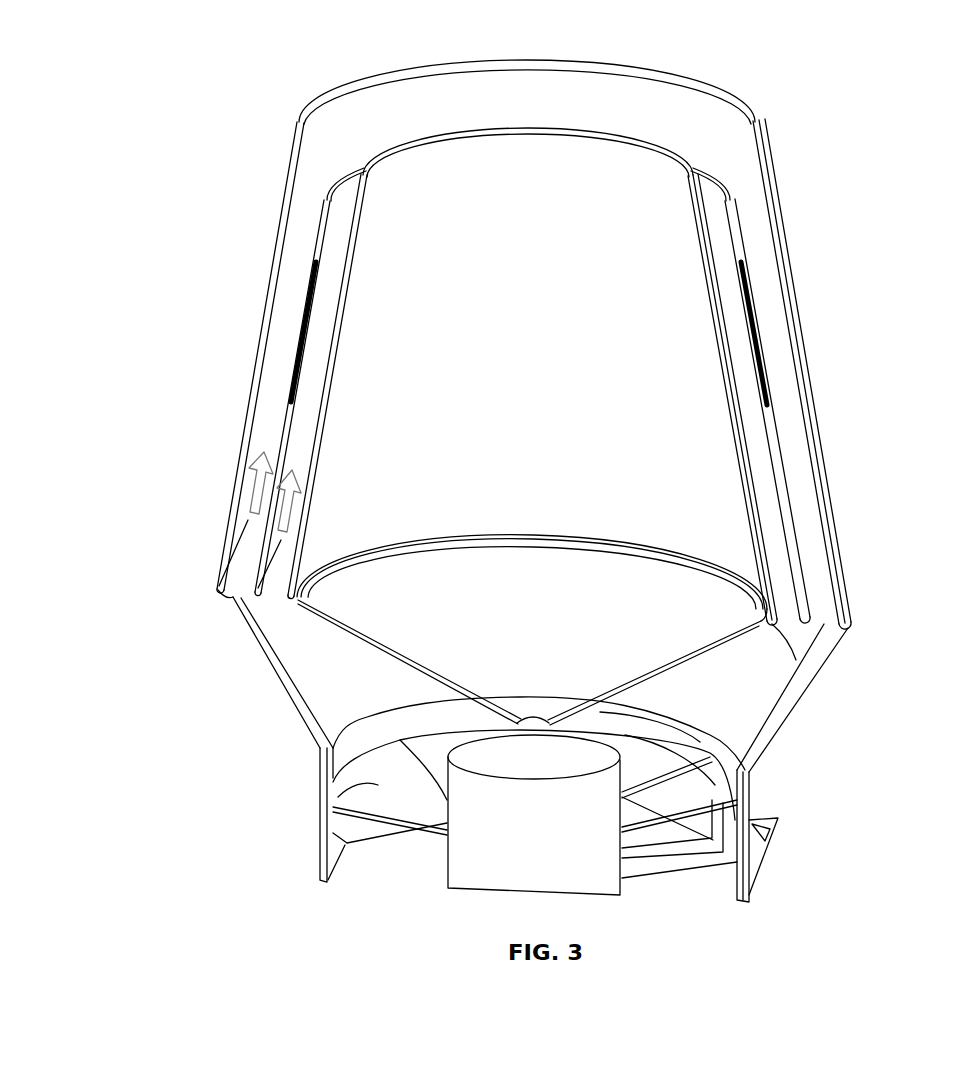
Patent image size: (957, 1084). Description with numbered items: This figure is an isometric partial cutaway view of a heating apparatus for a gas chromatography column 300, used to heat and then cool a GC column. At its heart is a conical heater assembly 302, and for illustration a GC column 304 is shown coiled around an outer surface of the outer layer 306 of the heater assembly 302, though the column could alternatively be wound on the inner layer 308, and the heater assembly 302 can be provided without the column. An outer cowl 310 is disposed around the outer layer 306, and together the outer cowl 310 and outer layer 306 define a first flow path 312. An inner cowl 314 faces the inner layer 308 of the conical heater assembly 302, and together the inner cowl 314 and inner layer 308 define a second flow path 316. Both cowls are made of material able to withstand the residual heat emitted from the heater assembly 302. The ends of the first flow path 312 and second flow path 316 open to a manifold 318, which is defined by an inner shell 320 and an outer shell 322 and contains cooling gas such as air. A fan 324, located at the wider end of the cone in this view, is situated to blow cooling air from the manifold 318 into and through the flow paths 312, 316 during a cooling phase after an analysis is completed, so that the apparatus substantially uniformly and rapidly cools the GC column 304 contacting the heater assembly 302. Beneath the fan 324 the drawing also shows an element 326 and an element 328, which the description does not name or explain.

The gas chromatography column heating apparatus 300 is at (779, 91).
The heater assembly 302 is at (782, 472).
The GC column 304 is at (757, 354).
The outer layer 306 is at (797, 540).
The inner layer 308 is at (715, 204).
The outer cowl 310 is at (280, 286).
The first flow path 312 is at (245, 520).
The inner cowl 314 is at (318, 428).
The second flow path 316 is at (283, 542).
The manifold 318 is at (760, 660).
The inner shell 320 is at (330, 625).
The outer shell 322 is at (775, 702).
The fan 324 is at (380, 782).
The motor 326 is at (485, 842).
The base frame 328 is at (762, 808).